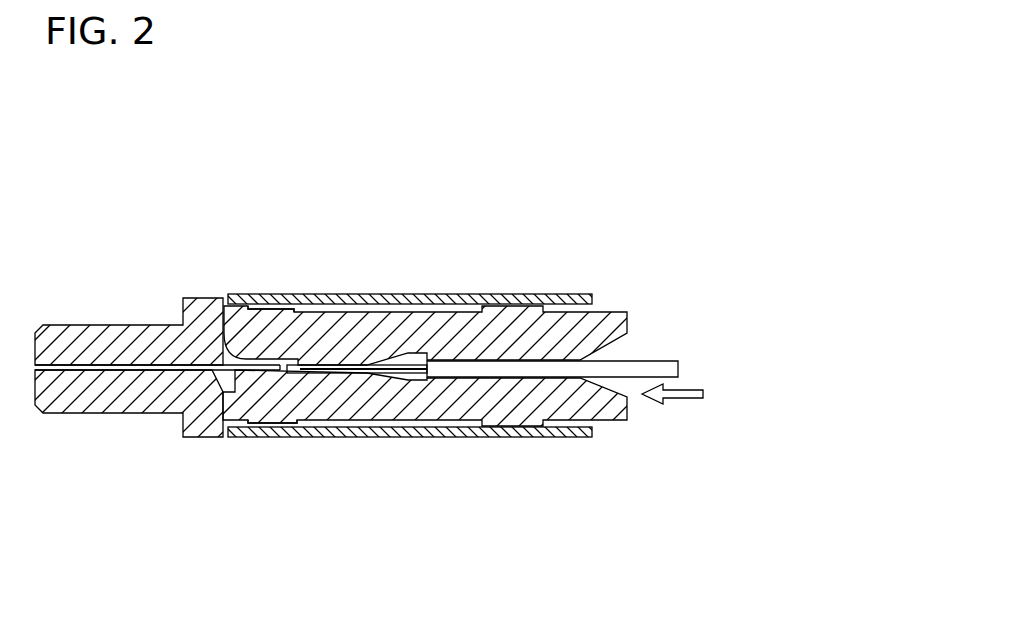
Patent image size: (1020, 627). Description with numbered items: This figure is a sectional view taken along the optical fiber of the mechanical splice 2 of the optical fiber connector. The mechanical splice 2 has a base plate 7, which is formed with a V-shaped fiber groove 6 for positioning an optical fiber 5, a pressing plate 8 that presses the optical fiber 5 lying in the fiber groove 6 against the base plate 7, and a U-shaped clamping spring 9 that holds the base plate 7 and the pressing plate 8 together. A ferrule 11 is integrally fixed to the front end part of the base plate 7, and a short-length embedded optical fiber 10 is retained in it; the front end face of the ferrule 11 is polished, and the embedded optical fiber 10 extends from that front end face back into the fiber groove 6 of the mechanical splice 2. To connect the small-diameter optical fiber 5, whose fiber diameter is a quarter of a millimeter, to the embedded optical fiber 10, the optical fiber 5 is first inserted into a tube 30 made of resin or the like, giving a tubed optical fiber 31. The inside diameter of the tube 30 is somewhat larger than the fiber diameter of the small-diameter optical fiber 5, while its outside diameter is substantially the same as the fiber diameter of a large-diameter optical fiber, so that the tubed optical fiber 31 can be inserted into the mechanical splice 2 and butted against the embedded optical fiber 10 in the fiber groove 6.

The mechanical splice 2 is at (508, 175).
The optical fiber 5 is at (366, 366).
The fiber groove 6 is at (287, 308).
The base plate 7 is at (512, 398).
The pressing plate 8 is at (452, 328).
The clamping spring 9 is at (378, 430).
The embedded optical fiber 10 is at (101, 368).
The ferrule 11 is at (114, 398).
The tube 30 is at (520, 368).
The tubed optical fiber 31 is at (652, 354).